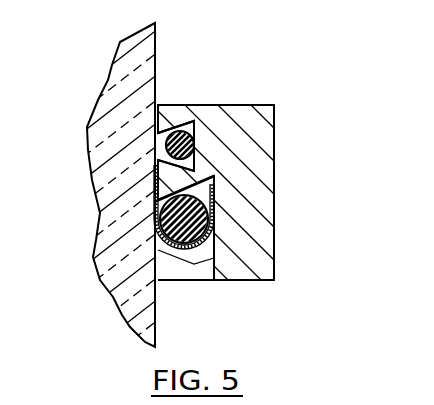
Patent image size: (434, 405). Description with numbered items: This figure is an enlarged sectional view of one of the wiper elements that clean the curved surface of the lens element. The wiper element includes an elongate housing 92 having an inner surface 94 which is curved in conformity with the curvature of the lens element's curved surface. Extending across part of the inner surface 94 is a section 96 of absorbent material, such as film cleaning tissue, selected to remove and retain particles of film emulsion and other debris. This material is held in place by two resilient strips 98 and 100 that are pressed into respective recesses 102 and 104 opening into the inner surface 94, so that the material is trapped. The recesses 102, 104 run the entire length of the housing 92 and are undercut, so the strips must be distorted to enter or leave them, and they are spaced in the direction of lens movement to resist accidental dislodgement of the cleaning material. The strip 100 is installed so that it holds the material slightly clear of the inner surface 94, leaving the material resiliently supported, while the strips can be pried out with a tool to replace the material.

The elongate housing 92 is at (258, 163).
The inner surface 94 is at (158, 118).
The section of absorbant material 96 is at (154, 176).
The resilient strip 98 is at (195, 145).
The resilient strip 100 is at (162, 214).
The recess 102 is at (172, 128).
The recess 104 is at (193, 264).